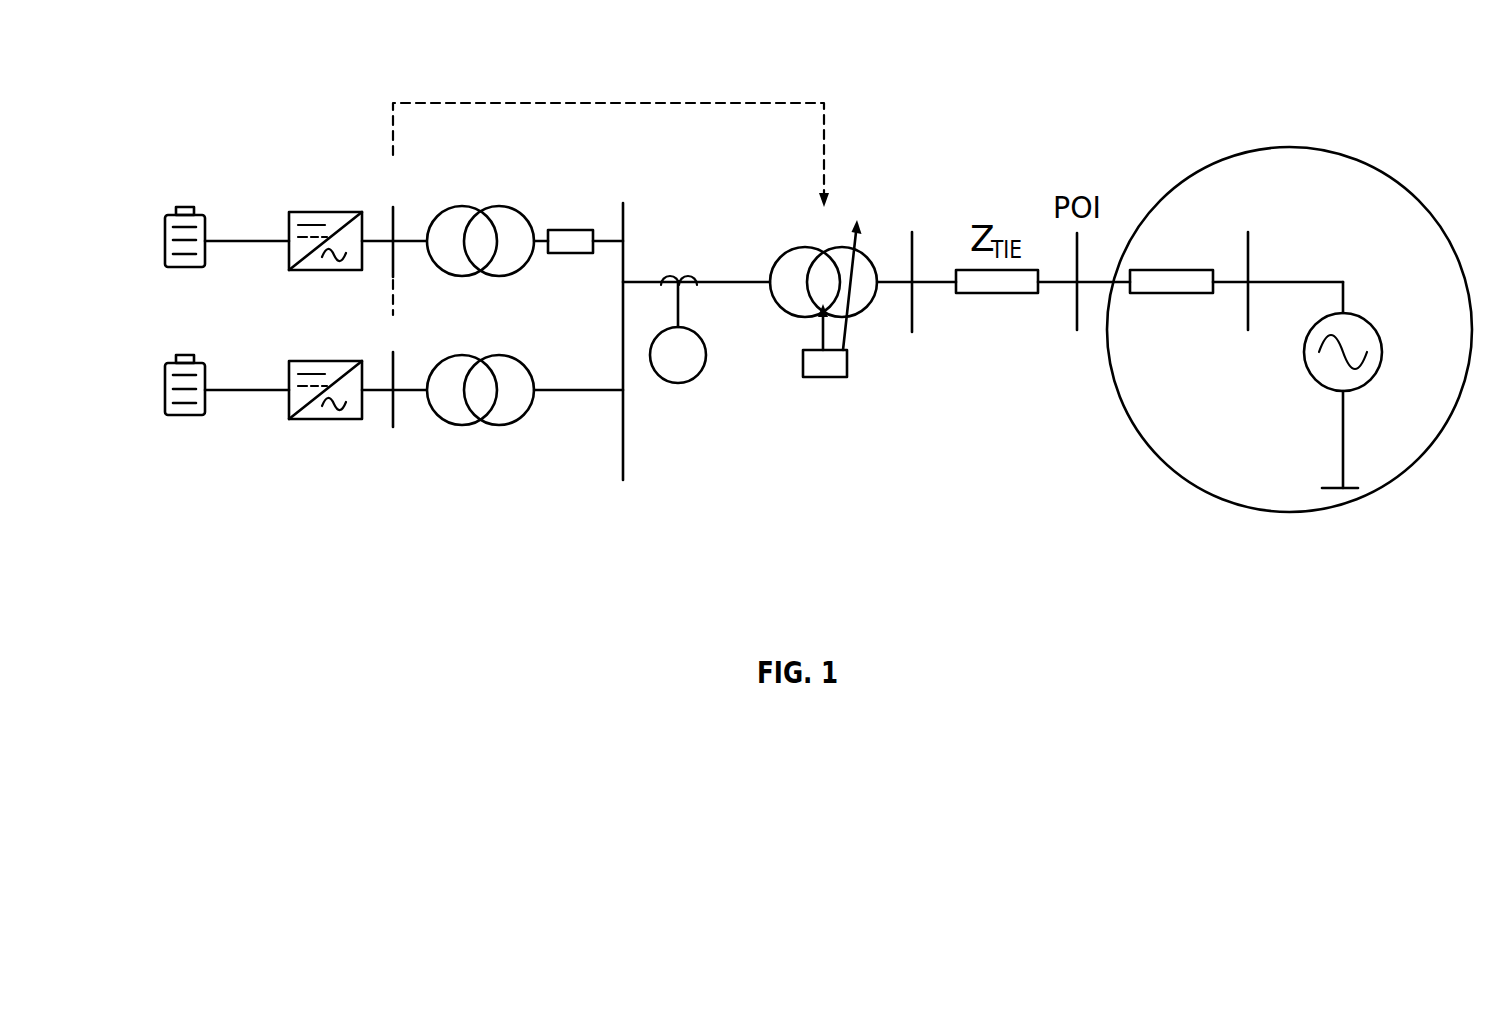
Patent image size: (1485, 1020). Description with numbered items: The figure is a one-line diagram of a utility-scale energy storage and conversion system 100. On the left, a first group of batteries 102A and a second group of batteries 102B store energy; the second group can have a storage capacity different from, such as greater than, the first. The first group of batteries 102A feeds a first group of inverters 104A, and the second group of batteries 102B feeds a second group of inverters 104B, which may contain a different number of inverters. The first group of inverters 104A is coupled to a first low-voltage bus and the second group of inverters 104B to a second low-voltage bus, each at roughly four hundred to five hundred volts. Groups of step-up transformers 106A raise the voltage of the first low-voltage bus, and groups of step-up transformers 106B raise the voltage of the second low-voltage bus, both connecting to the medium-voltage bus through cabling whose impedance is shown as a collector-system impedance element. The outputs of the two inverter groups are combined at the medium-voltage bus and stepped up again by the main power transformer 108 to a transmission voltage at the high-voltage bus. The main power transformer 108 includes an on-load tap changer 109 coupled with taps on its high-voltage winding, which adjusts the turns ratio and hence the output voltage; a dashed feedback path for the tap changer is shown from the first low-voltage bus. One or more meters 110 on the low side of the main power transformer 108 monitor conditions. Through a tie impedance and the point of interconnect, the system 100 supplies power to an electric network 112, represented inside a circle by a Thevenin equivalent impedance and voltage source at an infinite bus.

The utility-scale energy storage and conversion system 100 is at (957, 537).
The first group of batteries 102A is at (183, 206).
The second group of batteries 102B is at (183, 355).
The first group of inverters 104A is at (312, 211).
The second group of inverters 104B is at (312, 360).
The groups of step-up transformers 106A is at (499, 206).
The groups of step-up transformers 106B is at (499, 356).
The main power transformer 108 is at (790, 250).
The on-load tap changer 109 is at (848, 372).
The meters 110 is at (679, 384).
The electric network 112 is at (1382, 172).